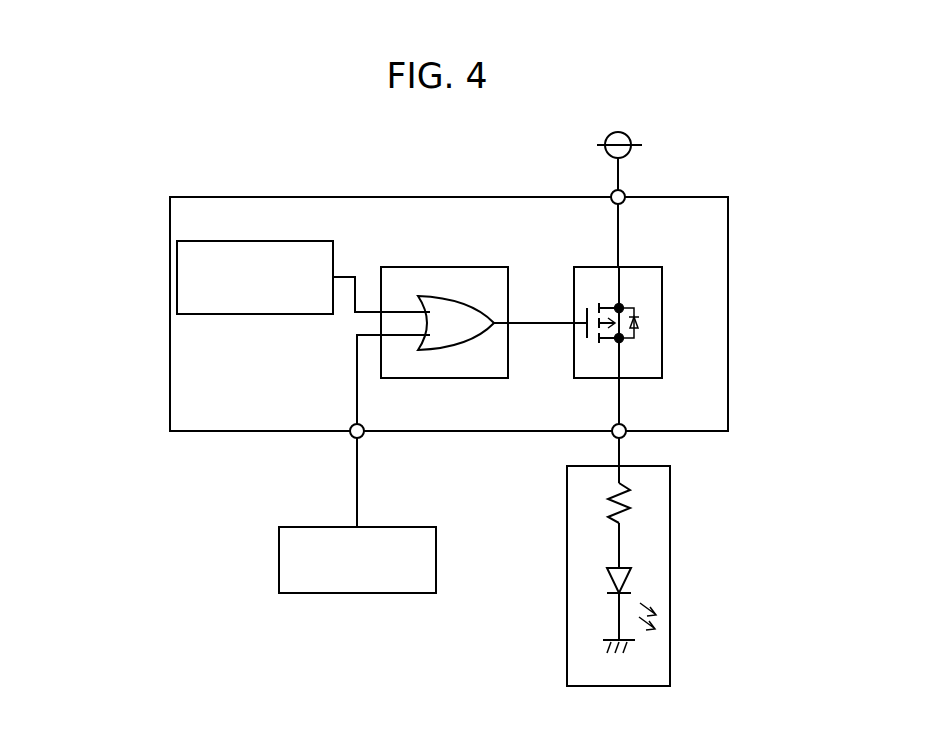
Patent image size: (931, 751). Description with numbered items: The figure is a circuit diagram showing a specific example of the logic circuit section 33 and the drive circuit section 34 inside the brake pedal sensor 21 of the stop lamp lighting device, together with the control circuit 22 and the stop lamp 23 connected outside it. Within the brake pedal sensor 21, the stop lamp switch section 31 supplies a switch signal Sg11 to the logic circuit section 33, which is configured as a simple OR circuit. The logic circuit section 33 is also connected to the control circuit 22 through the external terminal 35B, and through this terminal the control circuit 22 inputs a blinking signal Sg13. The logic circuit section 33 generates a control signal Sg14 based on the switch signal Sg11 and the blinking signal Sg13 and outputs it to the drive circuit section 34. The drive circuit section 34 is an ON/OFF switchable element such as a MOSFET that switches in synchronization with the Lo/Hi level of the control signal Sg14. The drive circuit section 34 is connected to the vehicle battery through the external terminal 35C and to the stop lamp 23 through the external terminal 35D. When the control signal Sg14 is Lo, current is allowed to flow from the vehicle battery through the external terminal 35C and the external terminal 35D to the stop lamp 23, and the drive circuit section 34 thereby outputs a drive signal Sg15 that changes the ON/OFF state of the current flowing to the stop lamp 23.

The brake pedal sensor 21 is at (168, 328).
The control circuit 22 is at (278, 543).
The stop lamp 23 is at (670, 558).
The stop lamp switch section 31 is at (228, 240).
The logic circuit section 33 is at (433, 267).
The drive circuit section 34 is at (597, 267).
The external terminal 35B is at (349, 434).
The external terminal 35C is at (625, 192).
The external terminal 35D is at (625, 435).
The switch signal Sg11 is at (350, 277).
The blinking signal Sg13 is at (358, 492).
The control signal Sg14 is at (540, 322).
The drive signal Sg15 is at (622, 408).